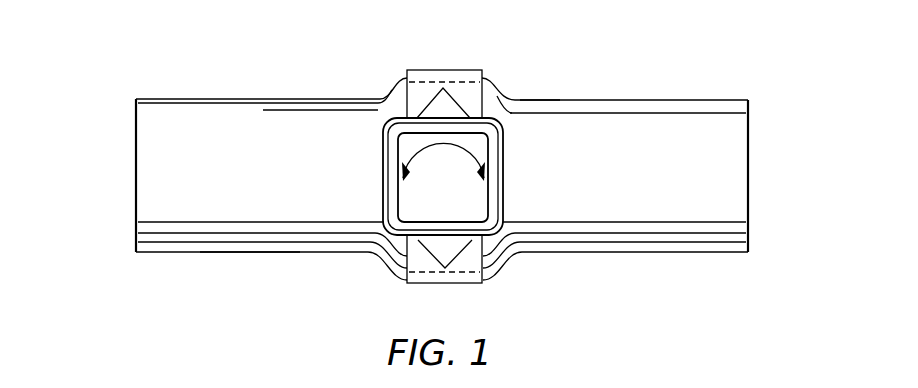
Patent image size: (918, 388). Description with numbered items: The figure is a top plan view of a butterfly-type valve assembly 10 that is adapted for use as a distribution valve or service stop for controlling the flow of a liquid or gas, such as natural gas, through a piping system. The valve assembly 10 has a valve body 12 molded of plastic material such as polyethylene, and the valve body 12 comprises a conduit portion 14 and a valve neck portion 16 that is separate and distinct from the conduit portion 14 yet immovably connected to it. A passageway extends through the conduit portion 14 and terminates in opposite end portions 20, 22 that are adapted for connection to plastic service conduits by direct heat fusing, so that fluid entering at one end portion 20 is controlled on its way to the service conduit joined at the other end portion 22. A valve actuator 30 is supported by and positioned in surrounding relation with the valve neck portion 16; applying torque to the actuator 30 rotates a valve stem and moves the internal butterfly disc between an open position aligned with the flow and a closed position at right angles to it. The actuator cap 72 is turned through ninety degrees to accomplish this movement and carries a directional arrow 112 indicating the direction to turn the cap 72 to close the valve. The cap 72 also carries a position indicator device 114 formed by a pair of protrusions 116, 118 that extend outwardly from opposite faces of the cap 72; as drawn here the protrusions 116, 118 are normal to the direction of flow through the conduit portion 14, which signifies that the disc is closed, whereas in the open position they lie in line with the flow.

The valve assembly 10 is at (366, 56).
The valve body 12 is at (497, 97).
The conduit portion 14 is at (322, 253).
The valve neck portion 16 is at (430, 65).
The end portion 20 is at (136, 118).
The end portion 22 is at (750, 118).
The valve actuator 30 is at (509, 155).
The actuator cap 72 is at (502, 188).
The directional arrow 112 is at (412, 152).
The position indicator device 114 is at (424, 257).
The protrusion 116 is at (461, 108).
The protrusion 118 is at (457, 255).